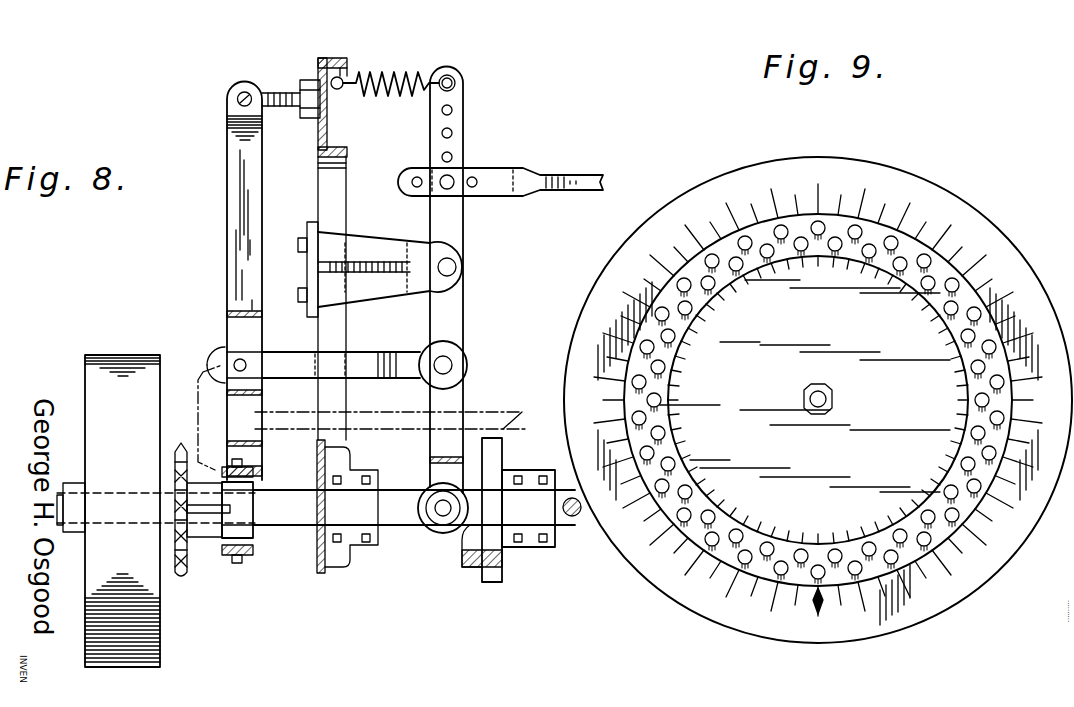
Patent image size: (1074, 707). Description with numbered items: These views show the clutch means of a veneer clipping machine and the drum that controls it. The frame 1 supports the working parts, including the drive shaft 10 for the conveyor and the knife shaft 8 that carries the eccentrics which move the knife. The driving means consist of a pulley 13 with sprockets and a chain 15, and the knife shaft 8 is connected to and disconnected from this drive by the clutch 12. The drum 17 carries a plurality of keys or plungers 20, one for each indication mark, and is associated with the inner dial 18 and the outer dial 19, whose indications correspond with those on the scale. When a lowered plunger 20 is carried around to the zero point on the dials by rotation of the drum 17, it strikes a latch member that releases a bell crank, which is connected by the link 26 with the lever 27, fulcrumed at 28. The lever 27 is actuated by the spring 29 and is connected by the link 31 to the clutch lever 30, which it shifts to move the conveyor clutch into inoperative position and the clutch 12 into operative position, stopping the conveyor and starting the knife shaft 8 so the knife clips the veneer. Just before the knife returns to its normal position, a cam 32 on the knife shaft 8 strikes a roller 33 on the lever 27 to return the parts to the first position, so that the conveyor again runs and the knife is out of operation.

In FIG. 8, the frame 1 is at (328, 57).
In FIG. 8, the knife shaft 8 is at (295, 530).
In FIG. 8, the drive shaft 10 is at (500, 411).
In FIG. 8, the clutch 12 is at (255, 532).
In FIG. 8, the pulley 13 is at (100, 368).
In FIG. 8, the chain 15 is at (182, 582).
In FIG. 9, the drum 17 is at (916, 245).
In FIG. 9, the inner dial 18 is at (814, 400).
In FIG. 9, the outer dial 19 is at (786, 158).
In FIG. 9, the keys or plungers 20 is at (804, 240).
In FIG. 8, the link 26 is at (569, 175).
In FIG. 8, the lever 27 is at (456, 125).
In FIG. 8, the fulcrum 28 is at (456, 268).
In FIG. 8, the spring 29 is at (390, 70).
In FIG. 8, the clutch lever 30 is at (239, 218).
In FIG. 8, the link 31 is at (410, 352).
In FIG. 8, the cam 32 is at (470, 570).
In FIG. 8, the roller 33 is at (434, 530).